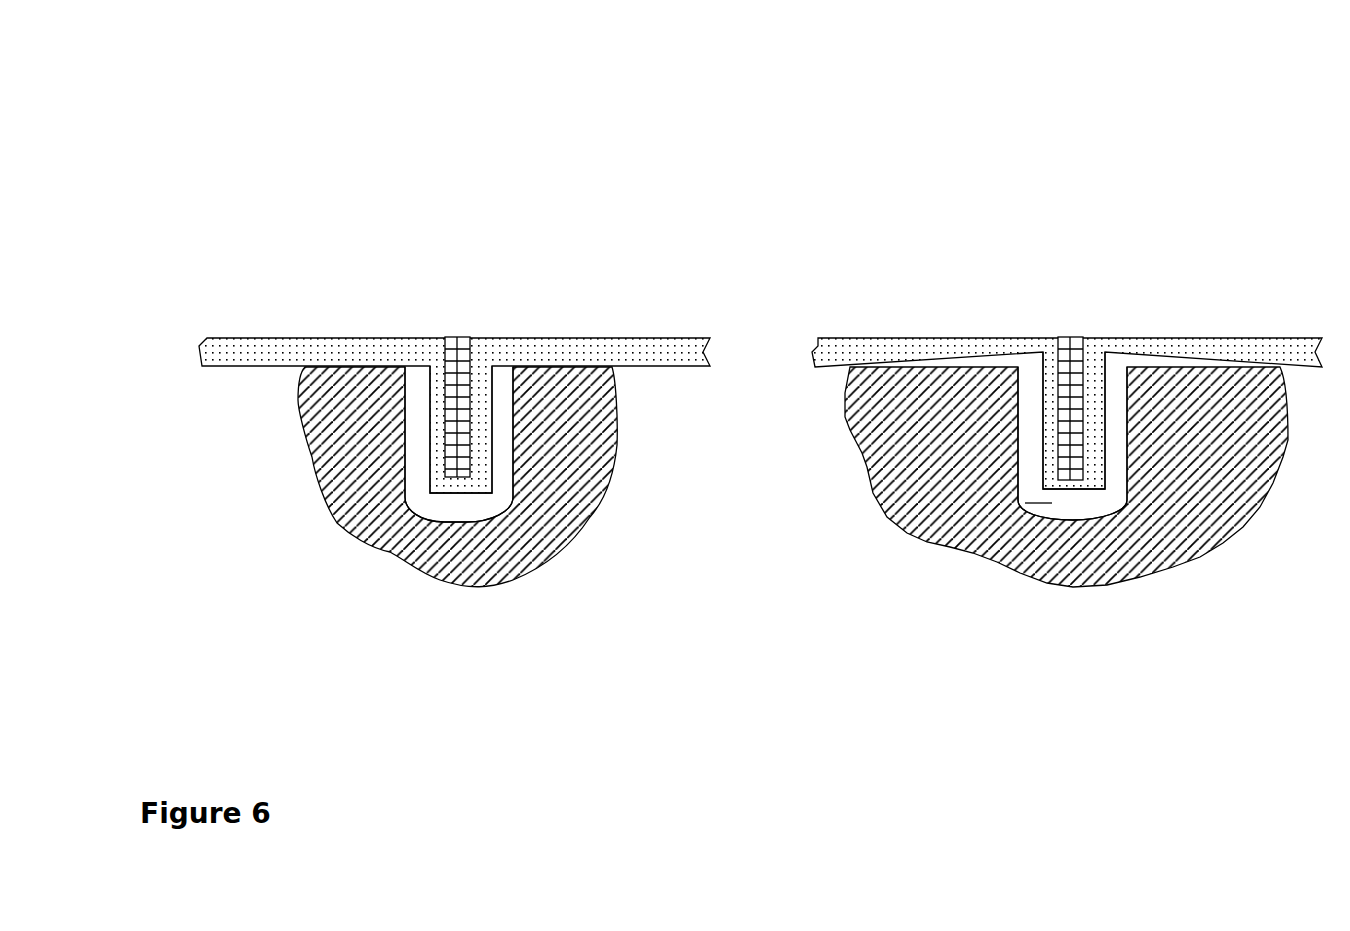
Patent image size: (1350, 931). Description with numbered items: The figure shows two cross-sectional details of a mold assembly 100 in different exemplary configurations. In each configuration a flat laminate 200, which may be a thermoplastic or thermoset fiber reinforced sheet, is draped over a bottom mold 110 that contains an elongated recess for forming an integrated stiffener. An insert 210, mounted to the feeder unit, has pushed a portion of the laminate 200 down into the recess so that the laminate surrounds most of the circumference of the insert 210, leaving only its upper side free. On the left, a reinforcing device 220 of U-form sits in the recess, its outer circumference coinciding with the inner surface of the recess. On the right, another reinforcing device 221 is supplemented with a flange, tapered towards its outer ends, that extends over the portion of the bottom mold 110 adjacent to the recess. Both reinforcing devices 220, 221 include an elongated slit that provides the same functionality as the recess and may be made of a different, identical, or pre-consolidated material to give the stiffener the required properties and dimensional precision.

The mold assembly 100 is at (541, 176).
The bottom mold 110 is at (502, 567).
The flat laminate 200 is at (893, 348).
The insert 210 is at (452, 338).
The reinforcing device 220 is at (470, 512).
The reinforcing device with flange 221 is at (950, 532).